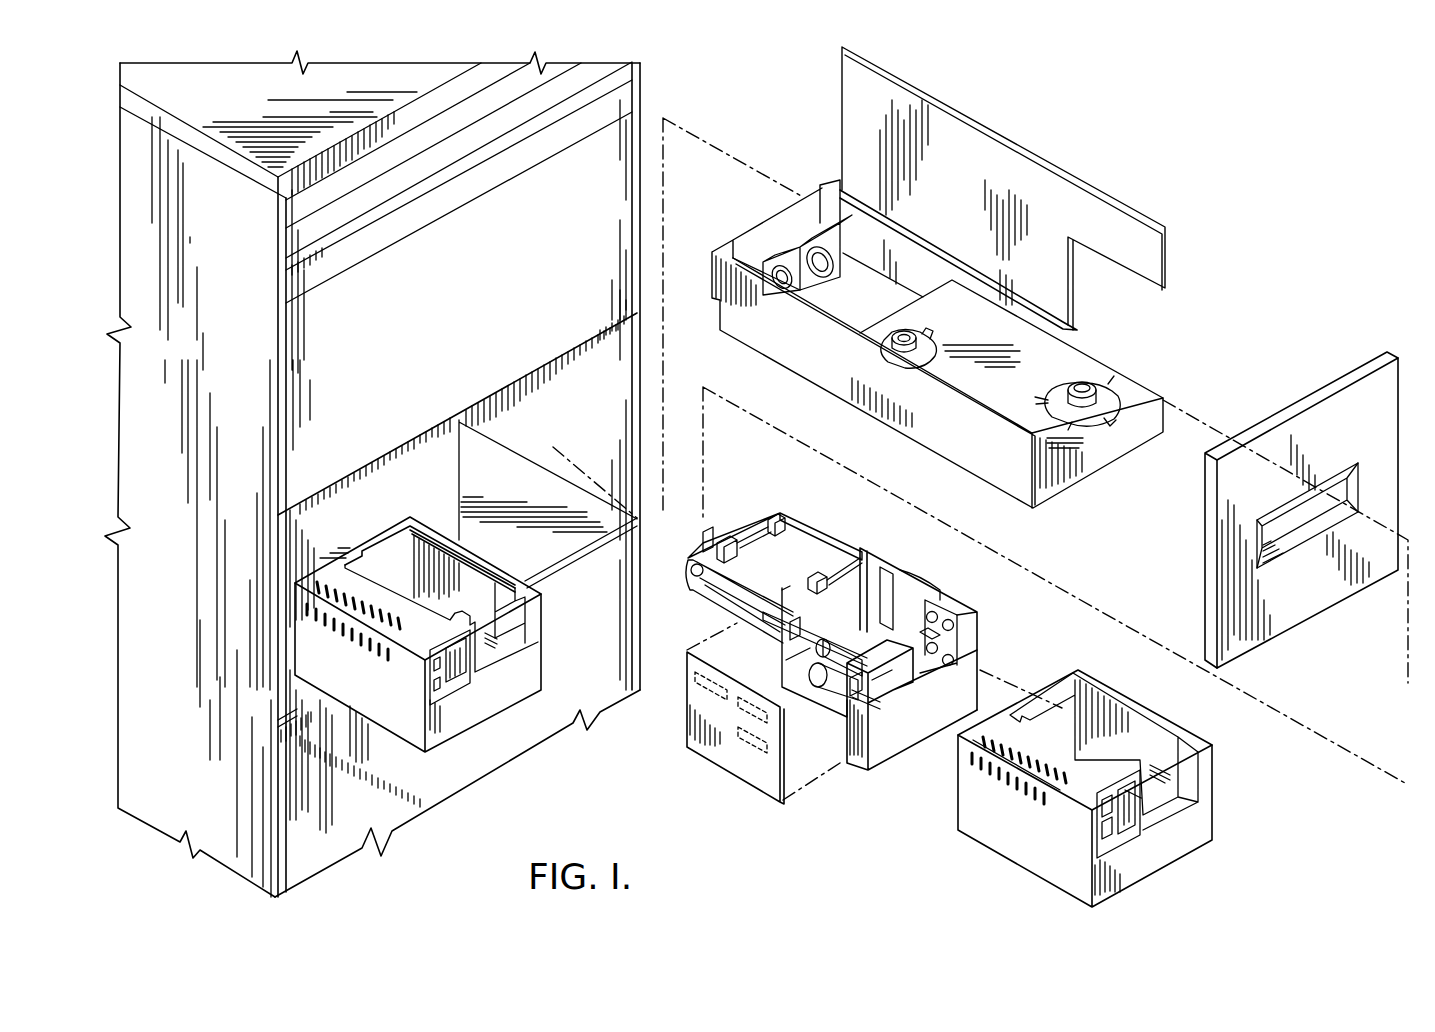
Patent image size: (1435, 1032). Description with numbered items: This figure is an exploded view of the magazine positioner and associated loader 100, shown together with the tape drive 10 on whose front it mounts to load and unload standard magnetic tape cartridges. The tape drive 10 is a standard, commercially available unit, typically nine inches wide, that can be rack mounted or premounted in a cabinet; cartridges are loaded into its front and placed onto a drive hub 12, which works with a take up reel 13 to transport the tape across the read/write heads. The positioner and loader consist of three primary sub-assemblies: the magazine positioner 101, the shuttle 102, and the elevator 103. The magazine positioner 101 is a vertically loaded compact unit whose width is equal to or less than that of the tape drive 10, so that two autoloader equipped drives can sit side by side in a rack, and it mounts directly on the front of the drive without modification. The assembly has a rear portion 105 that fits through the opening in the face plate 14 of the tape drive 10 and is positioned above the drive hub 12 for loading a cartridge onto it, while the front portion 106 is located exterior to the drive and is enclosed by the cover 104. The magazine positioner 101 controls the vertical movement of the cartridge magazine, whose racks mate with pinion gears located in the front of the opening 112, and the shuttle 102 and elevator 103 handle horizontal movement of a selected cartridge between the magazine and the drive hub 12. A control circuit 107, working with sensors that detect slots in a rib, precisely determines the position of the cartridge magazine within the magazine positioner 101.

The tape drive 10 is at (487, 470).
The drive hub 12 is at (1105, 380).
The take up reel 13 is at (903, 327).
The face plate 14 is at (1205, 537).
The magazine positioner and associated loader 100 is at (410, 693).
The magazine positioner 101 is at (887, 743).
The shuttle 102 is at (805, 687).
The elevator 103 is at (780, 572).
The cover 104 is at (1212, 815).
The rear portion 105 is at (873, 542).
The front portion 106 is at (998, 612).
The control circuit 107 is at (783, 773).
The opening 112 is at (910, 636).